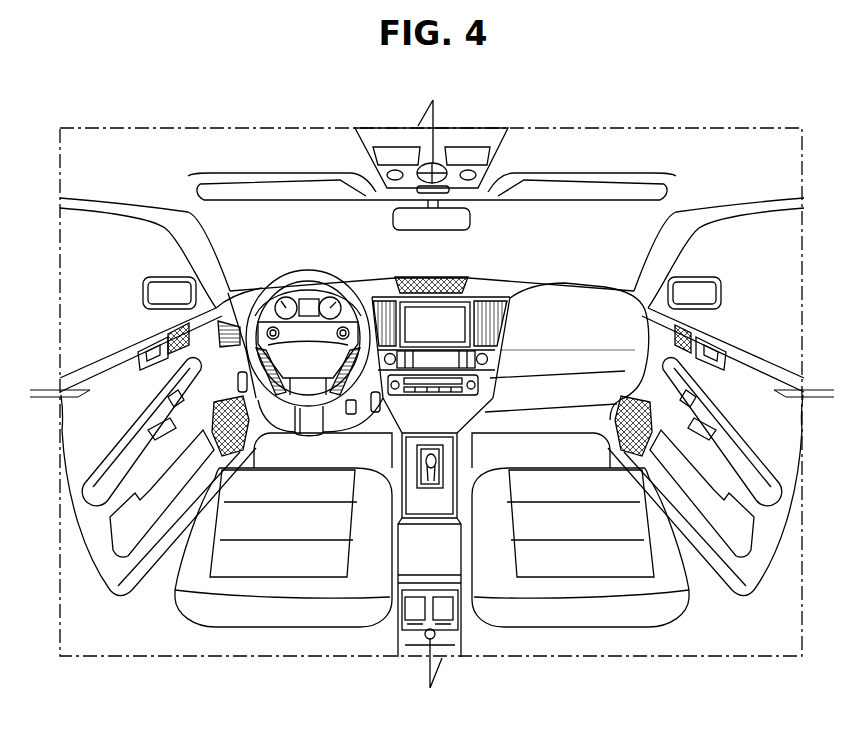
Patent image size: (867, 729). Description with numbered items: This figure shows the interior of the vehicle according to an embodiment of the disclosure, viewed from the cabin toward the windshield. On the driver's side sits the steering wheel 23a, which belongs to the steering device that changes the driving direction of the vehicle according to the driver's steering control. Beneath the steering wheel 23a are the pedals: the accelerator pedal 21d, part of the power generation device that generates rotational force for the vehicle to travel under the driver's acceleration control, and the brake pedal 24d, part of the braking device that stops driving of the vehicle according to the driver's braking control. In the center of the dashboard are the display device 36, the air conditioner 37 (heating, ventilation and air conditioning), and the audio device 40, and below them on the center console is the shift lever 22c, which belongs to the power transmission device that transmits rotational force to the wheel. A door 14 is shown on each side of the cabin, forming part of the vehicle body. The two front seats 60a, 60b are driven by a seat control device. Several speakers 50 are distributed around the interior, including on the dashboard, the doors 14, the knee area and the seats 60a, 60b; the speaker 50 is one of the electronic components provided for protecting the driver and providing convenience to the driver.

The door 14 is at (92, 442).
The steering wheel 23a is at (277, 283).
The speaker 50 is at (173, 330).
The display device 36 is at (452, 320).
The air conditioner 37 is at (445, 355).
The audio device 40 is at (483, 388).
The shift lever 22c is at (442, 460).
The brake pedal 24d is at (326, 430).
The accelerator pedal 21d is at (375, 430).
The seat 60a is at (278, 590).
The seat 60b is at (588, 588).